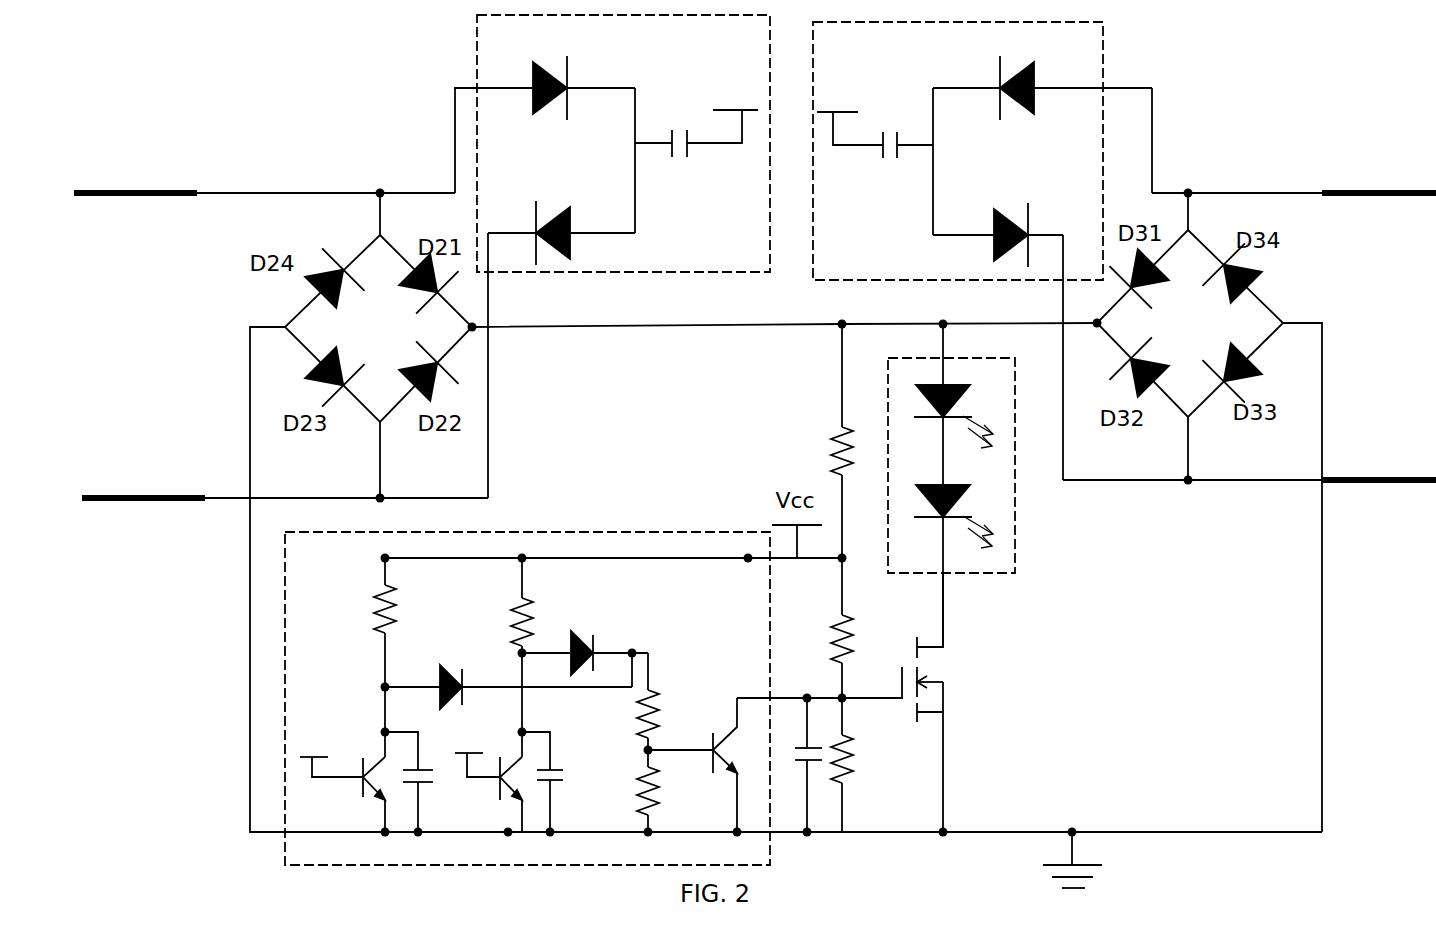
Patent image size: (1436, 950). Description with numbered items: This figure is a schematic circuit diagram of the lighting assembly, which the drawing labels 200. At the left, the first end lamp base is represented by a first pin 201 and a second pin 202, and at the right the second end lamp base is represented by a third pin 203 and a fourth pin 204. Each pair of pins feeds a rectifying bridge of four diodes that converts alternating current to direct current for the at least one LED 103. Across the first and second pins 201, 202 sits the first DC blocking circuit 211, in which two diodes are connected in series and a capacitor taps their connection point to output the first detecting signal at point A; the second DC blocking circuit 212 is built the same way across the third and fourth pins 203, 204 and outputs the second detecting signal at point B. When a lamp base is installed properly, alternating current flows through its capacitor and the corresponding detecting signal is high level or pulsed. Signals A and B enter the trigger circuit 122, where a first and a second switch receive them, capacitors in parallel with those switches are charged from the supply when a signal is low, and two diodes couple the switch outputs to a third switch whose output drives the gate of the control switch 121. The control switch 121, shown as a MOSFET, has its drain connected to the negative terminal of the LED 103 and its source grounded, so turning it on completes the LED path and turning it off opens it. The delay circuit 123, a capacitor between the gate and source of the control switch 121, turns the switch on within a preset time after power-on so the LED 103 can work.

The lighting circuit 200 is at (295, 146).
The first pin 201 is at (82, 175).
The second pin 202 is at (83, 472).
The third pin 203 is at (1353, 172).
The fourth pin 204 is at (1375, 455).
The first DC blocking circuit 211 is at (700, 59).
The second DC blocking circuit 212 is at (838, 64).
The LED 103 is at (978, 390).
The control switch 121 is at (953, 685).
The trigger circuit 122 is at (303, 574).
The delay circuit 123 is at (810, 787).